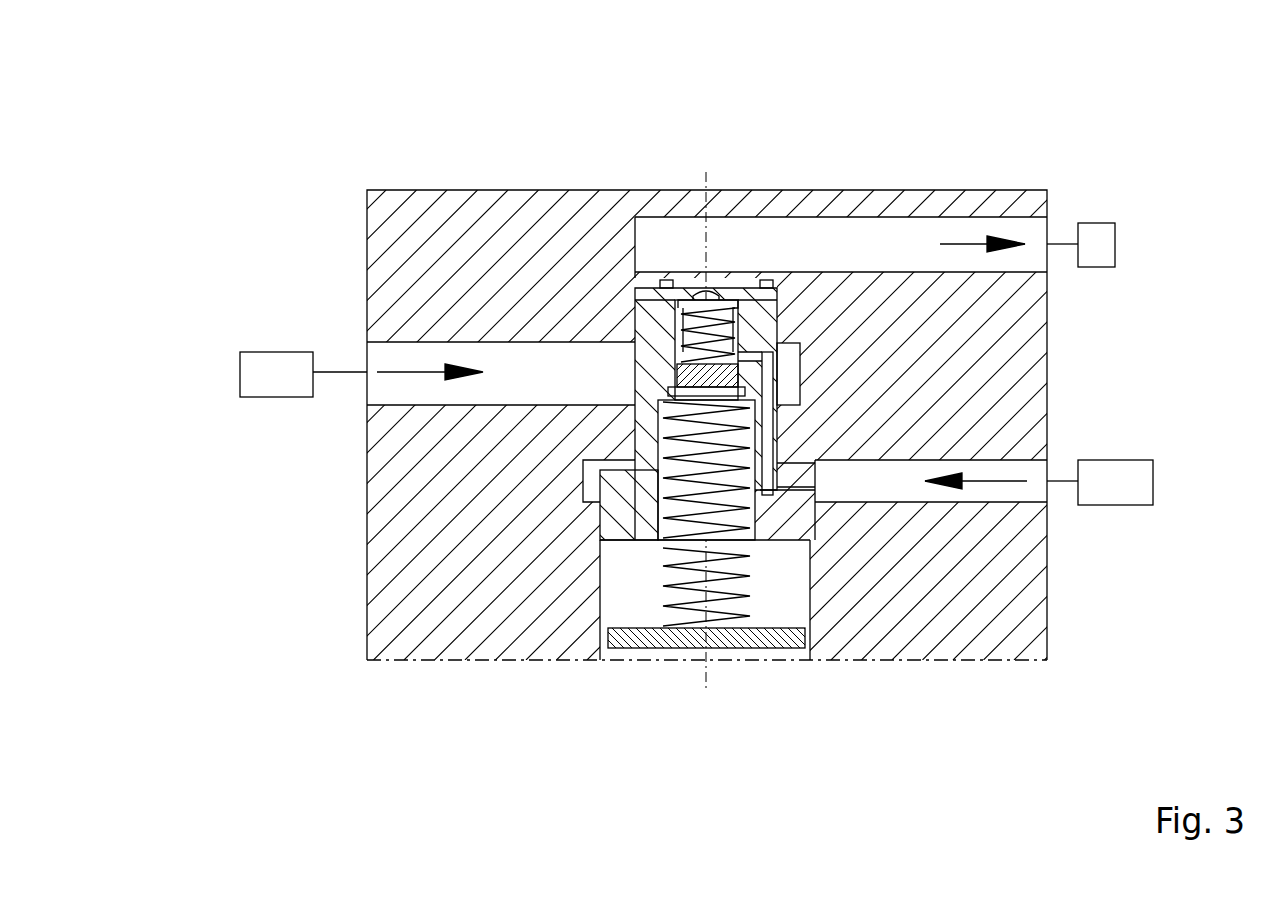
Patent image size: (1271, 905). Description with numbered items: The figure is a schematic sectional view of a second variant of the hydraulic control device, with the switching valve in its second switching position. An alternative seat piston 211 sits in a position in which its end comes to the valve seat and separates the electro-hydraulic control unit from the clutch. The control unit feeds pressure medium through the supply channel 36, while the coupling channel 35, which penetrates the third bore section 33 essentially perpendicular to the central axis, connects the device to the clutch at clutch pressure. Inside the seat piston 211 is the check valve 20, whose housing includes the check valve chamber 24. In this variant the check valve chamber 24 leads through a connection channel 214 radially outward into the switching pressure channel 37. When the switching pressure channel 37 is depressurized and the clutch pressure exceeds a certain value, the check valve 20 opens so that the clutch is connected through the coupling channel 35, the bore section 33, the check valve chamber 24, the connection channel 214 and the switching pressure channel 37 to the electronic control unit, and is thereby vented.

The check valve 20 is at (683, 283).
The check valve chamber 24 is at (637, 303).
The third bore section 33 is at (738, 285).
The coupling channel 35 is at (800, 242).
The supply channel 36 is at (513, 385).
The switching pressure channel 37 is at (882, 483).
The seat piston 211 is at (640, 505).
The connection channel 214 is at (790, 425).